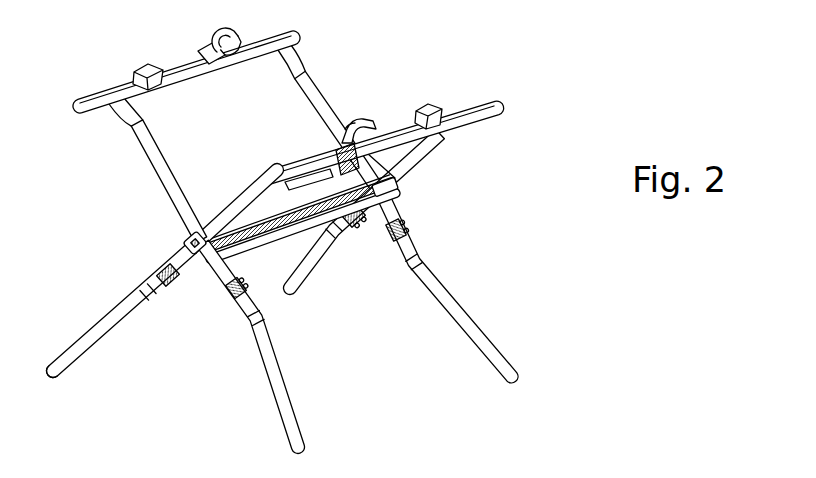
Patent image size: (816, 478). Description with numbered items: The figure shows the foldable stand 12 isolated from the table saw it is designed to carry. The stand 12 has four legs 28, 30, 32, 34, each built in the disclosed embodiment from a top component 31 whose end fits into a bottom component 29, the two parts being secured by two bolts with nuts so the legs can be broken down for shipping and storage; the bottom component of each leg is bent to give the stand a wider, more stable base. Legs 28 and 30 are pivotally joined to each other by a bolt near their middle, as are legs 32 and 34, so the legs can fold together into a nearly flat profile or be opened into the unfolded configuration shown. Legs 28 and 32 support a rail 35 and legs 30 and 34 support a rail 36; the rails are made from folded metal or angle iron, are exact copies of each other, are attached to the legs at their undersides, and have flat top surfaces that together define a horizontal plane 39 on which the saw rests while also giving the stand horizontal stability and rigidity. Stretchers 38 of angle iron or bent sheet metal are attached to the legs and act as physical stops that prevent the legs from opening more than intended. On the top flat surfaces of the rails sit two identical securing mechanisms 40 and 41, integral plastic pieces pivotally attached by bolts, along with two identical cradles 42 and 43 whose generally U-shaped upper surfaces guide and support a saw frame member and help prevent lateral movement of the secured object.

The foldable stand 12 is at (441, 49).
The leg 28 is at (72, 362).
The bottom component 29 is at (107, 327).
The leg 30 is at (279, 401).
The top component 31 is at (228, 211).
The leg 32 is at (298, 291).
The leg 34 is at (481, 345).
The rail 35 is at (505, 107).
The rail 36 is at (105, 97).
The stretchers 38 is at (392, 192).
The horizontal plane 39 is at (797, 472).
The securing mechanism 40 is at (370, 116).
The securing mechanism 41 is at (211, 36).
The cradle 42 is at (437, 120).
The cradle 43 is at (140, 77).